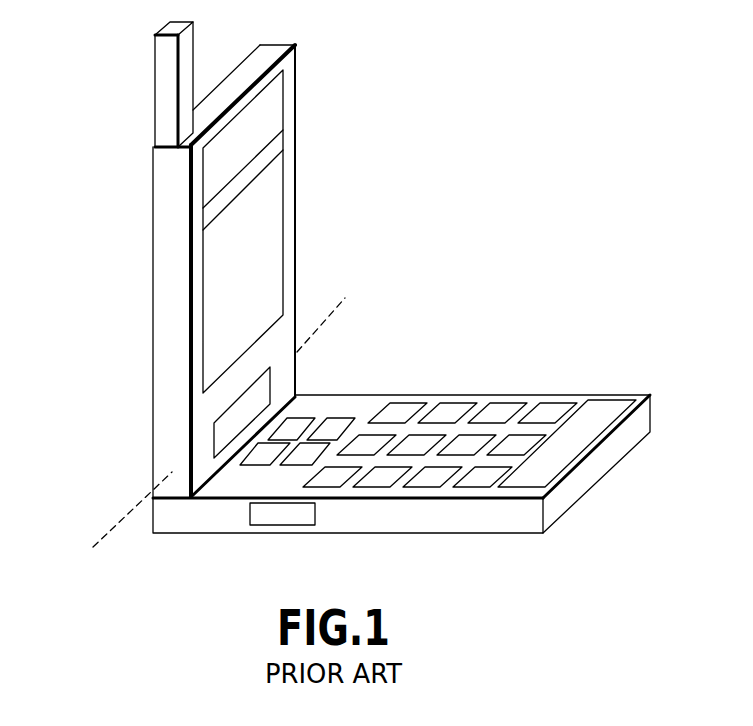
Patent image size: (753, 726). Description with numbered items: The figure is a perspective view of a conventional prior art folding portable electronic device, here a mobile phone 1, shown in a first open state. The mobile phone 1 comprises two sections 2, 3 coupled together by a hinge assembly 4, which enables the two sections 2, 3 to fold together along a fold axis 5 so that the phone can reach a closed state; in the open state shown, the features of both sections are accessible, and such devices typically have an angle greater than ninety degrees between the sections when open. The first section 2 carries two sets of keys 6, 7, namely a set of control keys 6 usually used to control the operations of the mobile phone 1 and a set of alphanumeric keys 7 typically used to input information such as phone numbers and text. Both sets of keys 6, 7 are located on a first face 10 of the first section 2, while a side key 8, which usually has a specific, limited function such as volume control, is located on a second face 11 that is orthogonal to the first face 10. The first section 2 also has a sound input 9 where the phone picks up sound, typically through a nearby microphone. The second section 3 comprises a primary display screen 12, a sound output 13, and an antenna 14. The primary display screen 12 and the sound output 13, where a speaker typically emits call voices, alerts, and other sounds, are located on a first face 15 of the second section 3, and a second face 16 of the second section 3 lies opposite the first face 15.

The mobile phone 1 is at (362, 304).
The first section 2 is at (406, 461).
The second section 3 is at (211, 316).
The hinge assembly 4 is at (225, 442).
The fold axis 5 is at (333, 313).
The set of control keys 6 is at (312, 388).
The set of alphanumeric keys 7 is at (395, 388).
The side key 8 is at (278, 517).
The sound input 9 is at (606, 408).
The first face 10 is at (212, 490).
The second face 11 is at (363, 518).
The primary display screen 12 is at (273, 198).
The sound output 13 is at (273, 110).
The antenna 14 is at (163, 88).
The first face 15 is at (279, 231).
The second face 16 is at (118, 237).